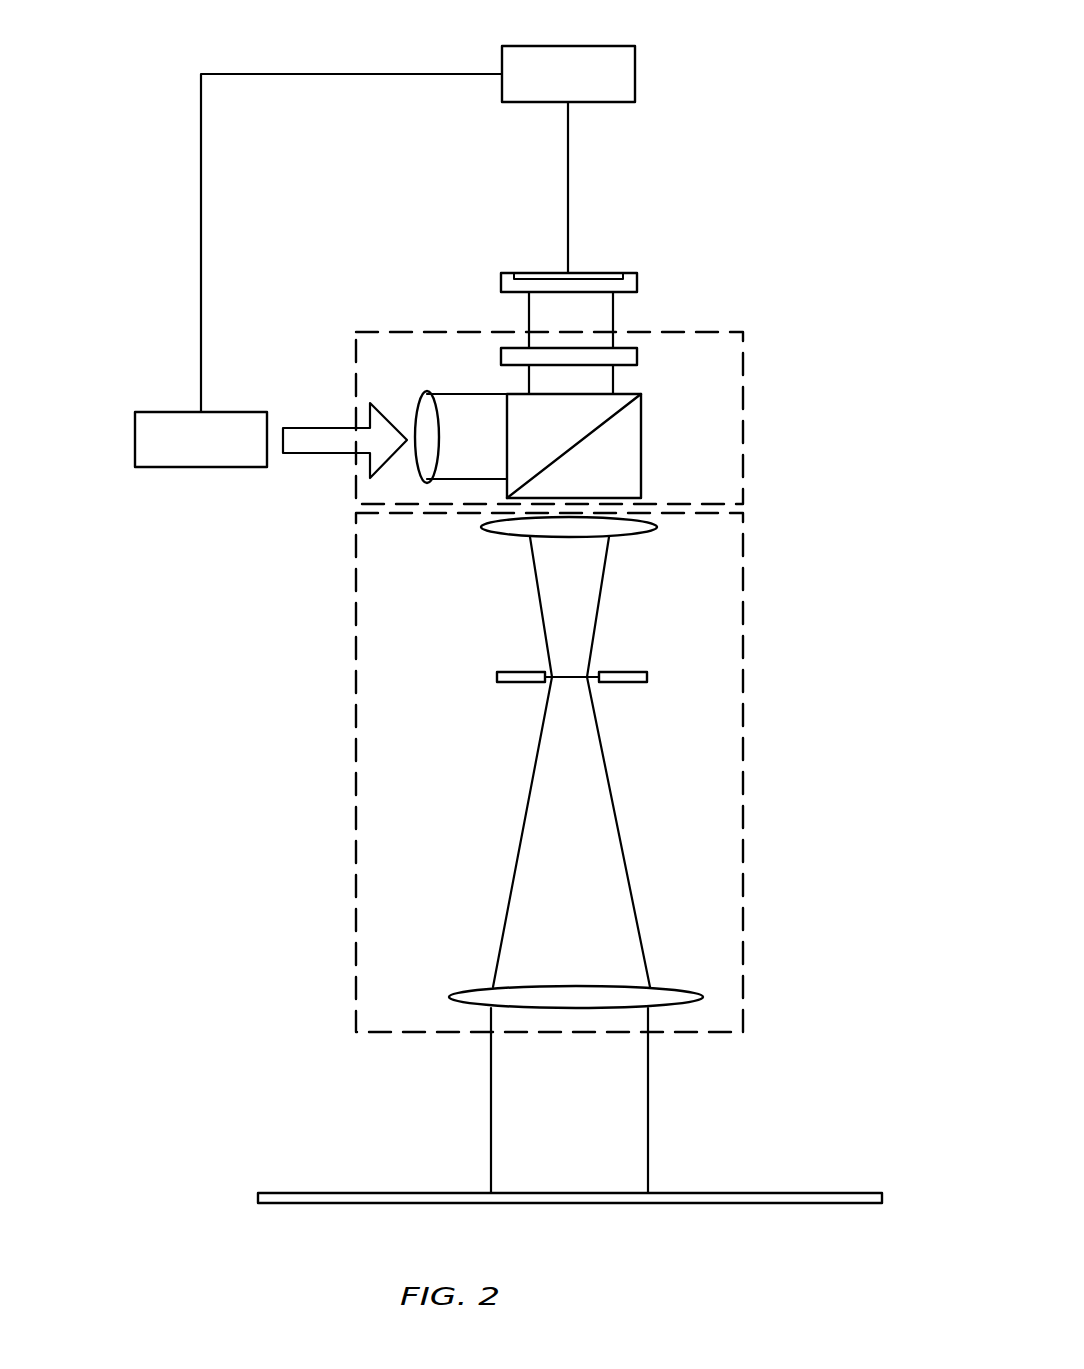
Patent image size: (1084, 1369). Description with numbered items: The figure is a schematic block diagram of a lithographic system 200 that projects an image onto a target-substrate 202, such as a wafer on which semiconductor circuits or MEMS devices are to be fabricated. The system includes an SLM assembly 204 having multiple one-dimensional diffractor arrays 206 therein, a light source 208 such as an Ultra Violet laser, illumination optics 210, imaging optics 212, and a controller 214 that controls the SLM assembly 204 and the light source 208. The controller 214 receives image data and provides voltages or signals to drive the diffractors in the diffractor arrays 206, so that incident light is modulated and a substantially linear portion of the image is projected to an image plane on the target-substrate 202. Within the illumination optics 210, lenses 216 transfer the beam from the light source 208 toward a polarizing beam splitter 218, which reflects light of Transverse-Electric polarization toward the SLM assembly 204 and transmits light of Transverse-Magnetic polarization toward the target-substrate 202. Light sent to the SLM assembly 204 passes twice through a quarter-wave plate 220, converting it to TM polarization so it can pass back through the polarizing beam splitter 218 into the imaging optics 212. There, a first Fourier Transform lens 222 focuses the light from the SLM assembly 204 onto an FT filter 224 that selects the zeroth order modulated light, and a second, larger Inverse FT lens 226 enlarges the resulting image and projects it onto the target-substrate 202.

The lithographic system 200 is at (157, 76).
The target-substrate 202 is at (762, 1193).
The SLM assembly 204 is at (495, 262).
The 1D diffractor arrays 206 is at (602, 273).
The light source 208 is at (201, 439).
The illumination optics 210 is at (387, 331).
The imaging optics 212 is at (355, 775).
The controller 214 is at (568, 74).
The lenses 216 is at (427, 391).
The polarizing beam splitter 218 is at (642, 441).
The quarter-wave plate 220 is at (638, 357).
The first Fourier Transform lens 222 is at (657, 525).
The FT filter 224 is at (496, 677).
The second Inverse FT lens 226 is at (449, 997).